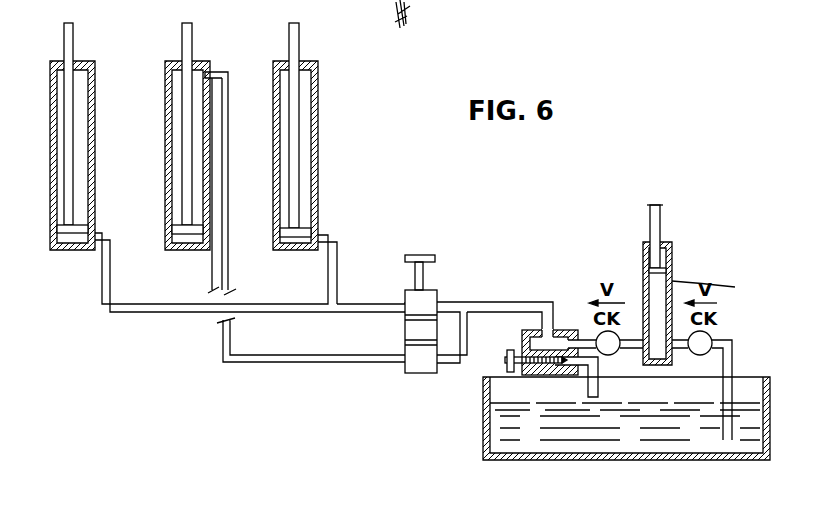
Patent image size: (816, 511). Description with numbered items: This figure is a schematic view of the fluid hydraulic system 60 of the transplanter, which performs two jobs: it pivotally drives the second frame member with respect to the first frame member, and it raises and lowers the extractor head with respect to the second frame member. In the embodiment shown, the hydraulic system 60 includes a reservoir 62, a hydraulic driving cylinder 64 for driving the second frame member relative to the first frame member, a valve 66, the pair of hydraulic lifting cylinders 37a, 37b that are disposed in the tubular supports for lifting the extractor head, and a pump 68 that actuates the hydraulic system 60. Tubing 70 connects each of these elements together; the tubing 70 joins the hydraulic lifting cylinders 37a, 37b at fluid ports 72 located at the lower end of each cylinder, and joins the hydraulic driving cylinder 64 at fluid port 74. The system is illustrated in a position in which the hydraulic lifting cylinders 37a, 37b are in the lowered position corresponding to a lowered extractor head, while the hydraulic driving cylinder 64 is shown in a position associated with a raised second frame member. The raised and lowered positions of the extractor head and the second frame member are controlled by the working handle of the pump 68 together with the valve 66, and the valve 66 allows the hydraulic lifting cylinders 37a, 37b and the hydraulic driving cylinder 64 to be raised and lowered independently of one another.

The hydraulic lifting cylinder 37a is at (55, 253).
The hydraulic lifting cylinder 37b is at (285, 255).
The hydraulic driving cylinder 64 is at (165, 142).
The fluid port 74 is at (215, 72).
The fluid ports 72 is at (95, 232).
The tubing 70 is at (222, 335).
The valve 66 is at (437, 290).
The hydraulic system 60 is at (500, 298).
The pump 68 is at (672, 272).
The reservoir 62 is at (483, 430).